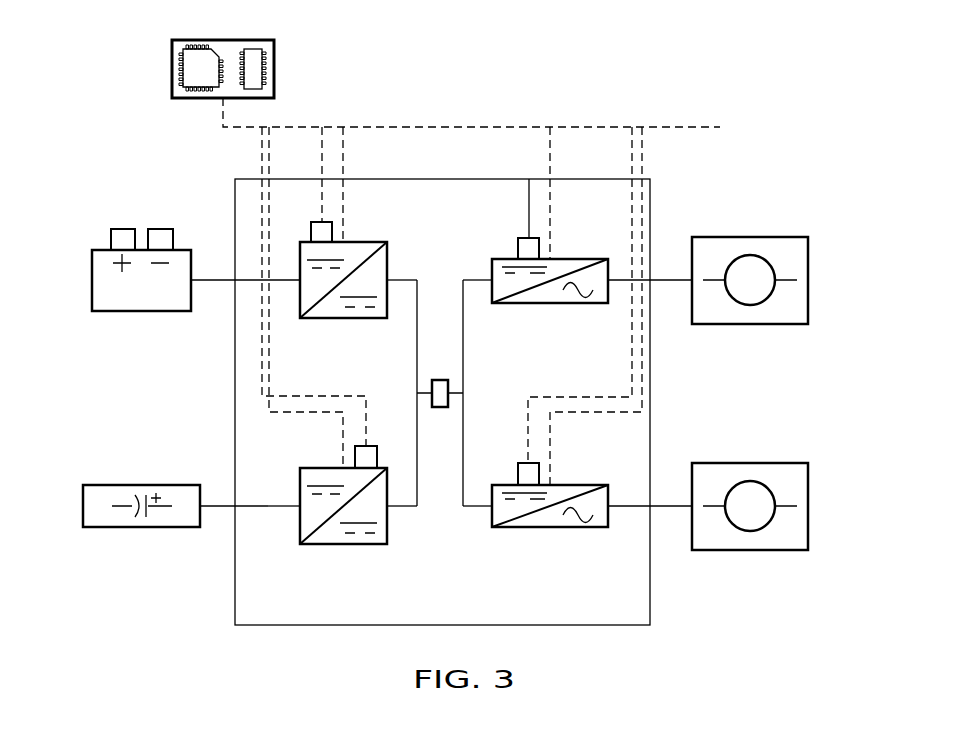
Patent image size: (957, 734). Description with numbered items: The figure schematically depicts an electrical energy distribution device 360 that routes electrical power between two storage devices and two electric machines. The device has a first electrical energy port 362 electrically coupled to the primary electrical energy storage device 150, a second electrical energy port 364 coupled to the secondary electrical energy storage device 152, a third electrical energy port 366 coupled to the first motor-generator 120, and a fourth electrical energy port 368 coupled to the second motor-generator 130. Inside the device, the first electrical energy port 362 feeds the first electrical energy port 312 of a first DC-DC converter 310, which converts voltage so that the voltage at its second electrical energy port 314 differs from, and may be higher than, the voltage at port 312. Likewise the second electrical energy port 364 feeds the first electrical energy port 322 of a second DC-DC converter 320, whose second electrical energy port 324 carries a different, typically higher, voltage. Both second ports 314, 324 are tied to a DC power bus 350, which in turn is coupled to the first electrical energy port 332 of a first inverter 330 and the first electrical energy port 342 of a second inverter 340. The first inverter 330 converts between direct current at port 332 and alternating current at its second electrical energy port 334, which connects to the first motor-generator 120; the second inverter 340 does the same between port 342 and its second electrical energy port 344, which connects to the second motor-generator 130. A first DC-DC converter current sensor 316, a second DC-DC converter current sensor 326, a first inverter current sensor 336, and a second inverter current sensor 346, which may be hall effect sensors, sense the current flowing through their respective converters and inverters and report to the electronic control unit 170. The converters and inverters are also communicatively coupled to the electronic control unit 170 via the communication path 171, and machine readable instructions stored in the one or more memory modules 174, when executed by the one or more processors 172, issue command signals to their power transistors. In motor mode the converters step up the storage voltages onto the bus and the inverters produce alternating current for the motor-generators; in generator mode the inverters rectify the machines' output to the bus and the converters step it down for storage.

The first motor-generator 120 is at (748, 237).
The second motor-generator 130 is at (748, 550).
The primary electrical energy storage device 150 is at (92, 281).
The secondary electrical energy storage device 152 is at (142, 527).
The electronic control unit 170 is at (172, 78).
The communication path 171 is at (657, 127).
The one or more processors 172 is at (198, 56).
The one or more memory modules 174 is at (253, 56).
The first DC-DC converter 310 is at (372, 242).
The first electrical energy port of the first DC-DC converter 312 is at (290, 282).
The second electrical energy port of the first DC-DC converter 314 is at (403, 280).
The first DC-DC converter current sensor 316 is at (310, 222).
The second DC-DC converter 320 is at (343, 544).
The first electrical energy port of the second DC-DC converter 322 is at (281, 505).
The second electrical energy port of the second DC-DC converter 324 is at (401, 507).
The second DC-DC converter current sensor 326 is at (373, 445).
The first inverter 330 is at (571, 259).
The first electrical energy port of the first inverter 332 is at (478, 280).
The second electrical energy port of the first inverter 334 is at (612, 284).
The first inverter current sensor 336 is at (519, 238).
The second inverter 340 is at (548, 527).
The first electrical energy port of the second inverter 342 is at (481, 507).
The second electrical energy port of the second inverter 344 is at (632, 505).
The second inverter current sensor 346 is at (518, 462).
The DC power bus 350 is at (448, 388).
The electrical energy distribution device 360 is at (607, 626).
The first electrical energy port 362 is at (205, 282).
The second electrical energy port 364 is at (213, 505).
The third electrical energy port 366 is at (681, 280).
The fourth electrical energy port 368 is at (683, 506).